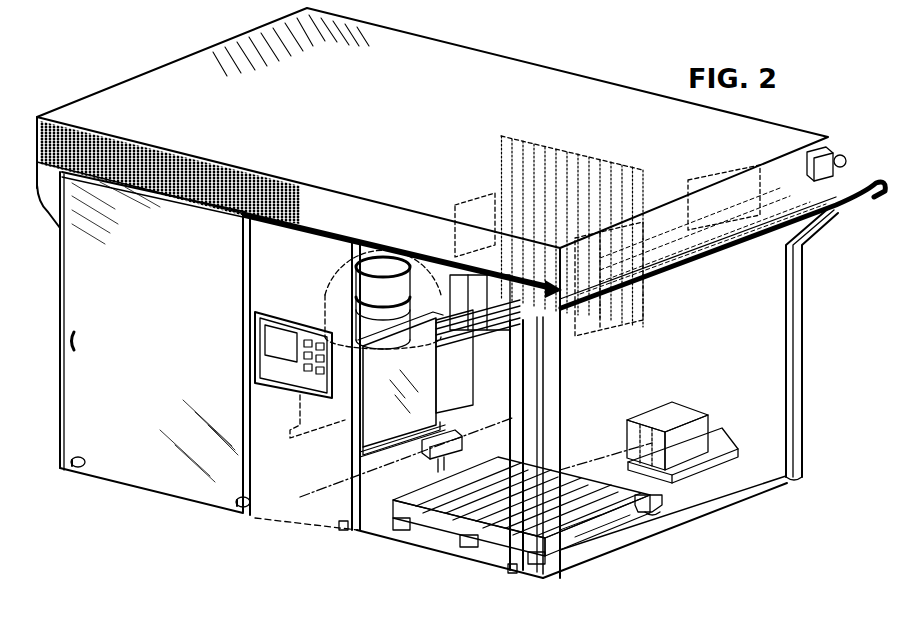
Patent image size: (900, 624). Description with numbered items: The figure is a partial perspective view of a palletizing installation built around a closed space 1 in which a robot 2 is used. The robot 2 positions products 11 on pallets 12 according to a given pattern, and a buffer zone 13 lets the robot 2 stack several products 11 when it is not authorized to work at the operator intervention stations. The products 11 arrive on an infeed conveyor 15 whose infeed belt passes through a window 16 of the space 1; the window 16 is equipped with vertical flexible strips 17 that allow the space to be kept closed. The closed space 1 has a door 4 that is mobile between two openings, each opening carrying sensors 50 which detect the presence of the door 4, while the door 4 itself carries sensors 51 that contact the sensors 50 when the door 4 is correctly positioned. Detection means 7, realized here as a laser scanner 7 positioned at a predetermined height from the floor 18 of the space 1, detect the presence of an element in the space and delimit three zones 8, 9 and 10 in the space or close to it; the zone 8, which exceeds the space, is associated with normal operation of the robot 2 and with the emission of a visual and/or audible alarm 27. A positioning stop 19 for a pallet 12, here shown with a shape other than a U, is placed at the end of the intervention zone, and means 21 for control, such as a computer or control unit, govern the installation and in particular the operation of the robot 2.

The closed space 1 is at (817, 296).
The robot 2 is at (373, 261).
The door 4 is at (140, 348).
The detection means 7 is at (450, 434).
The zone 8 is at (382, 548).
The zone 9 is at (377, 493).
The zone 10 is at (464, 450).
The products 11 is at (457, 300).
The pallet 12 is at (573, 513).
The buffer zone 13 is at (748, 443).
The infeed conveyor 15 is at (470, 382).
The window 16 is at (568, 152).
The vertical flexible strips 17 is at (532, 163).
The floor 18 is at (488, 541).
The positioning stop 19 is at (656, 508).
The means for control 21 is at (283, 372).
The alarm 27 is at (838, 146).
The sensors 50 is at (81, 470).
The sensors 51 is at (72, 468).